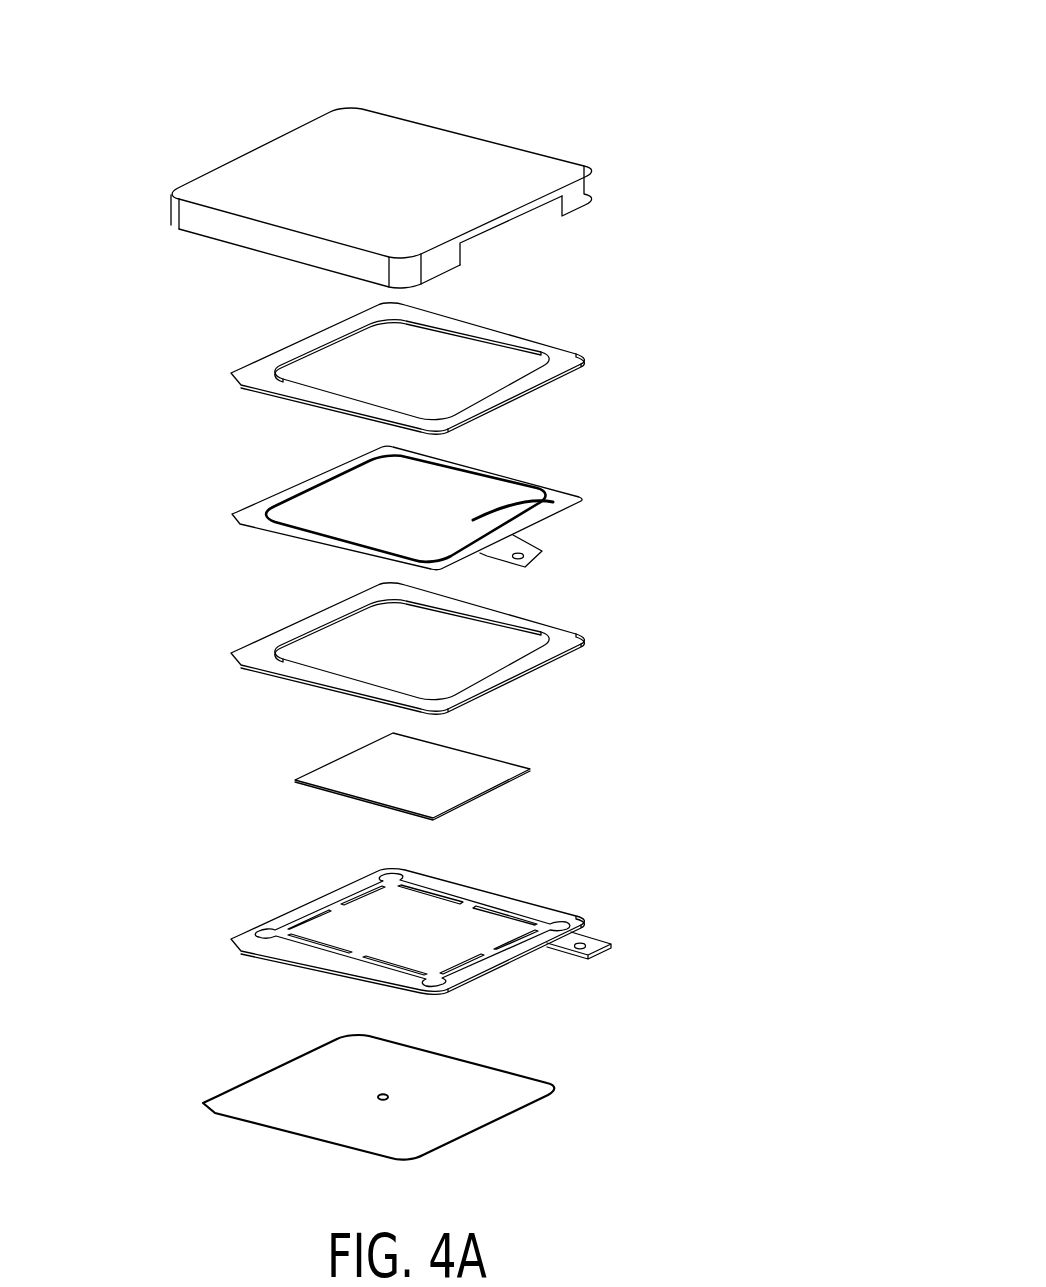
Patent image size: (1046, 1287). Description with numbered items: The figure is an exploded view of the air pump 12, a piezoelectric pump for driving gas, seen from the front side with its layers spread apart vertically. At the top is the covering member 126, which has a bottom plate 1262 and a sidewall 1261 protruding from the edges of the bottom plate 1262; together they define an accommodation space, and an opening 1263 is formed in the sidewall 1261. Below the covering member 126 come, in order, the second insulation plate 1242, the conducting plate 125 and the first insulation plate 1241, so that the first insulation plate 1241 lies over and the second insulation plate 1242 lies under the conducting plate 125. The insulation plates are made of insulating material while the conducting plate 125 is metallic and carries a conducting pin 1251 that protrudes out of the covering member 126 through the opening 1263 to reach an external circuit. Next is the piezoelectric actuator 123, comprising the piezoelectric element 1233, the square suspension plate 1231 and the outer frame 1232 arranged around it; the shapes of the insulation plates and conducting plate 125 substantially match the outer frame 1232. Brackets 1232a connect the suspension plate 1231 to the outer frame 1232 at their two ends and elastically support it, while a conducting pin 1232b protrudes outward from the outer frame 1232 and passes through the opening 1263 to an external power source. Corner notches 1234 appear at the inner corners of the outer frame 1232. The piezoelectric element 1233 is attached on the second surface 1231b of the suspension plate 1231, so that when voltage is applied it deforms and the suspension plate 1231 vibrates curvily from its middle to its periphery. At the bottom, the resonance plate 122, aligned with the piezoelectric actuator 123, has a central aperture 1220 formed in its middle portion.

The air pump 12 is at (789, 25).
The covering member 126 is at (486, 180).
The sidewall 1261 is at (580, 200).
The bottom plate 1262 is at (456, 155).
The opening 1263 is at (528, 235).
The second insulation plate 1242 is at (575, 355).
The conducting plate 125 is at (458, 508).
The conducting pin 1251 is at (537, 553).
The first insulation plate 1241 is at (575, 635).
The piezoelectric actuator 123 is at (504, 872).
The piezoelectric element 1233 is at (455, 768).
The suspension plate 1231 is at (437, 915).
The second surface 1231b is at (352, 922).
The outer frame 1232 is at (463, 921).
The bracket 1232a is at (359, 958).
The conducting pin 1232b is at (629, 937).
The corner notch 1234 is at (545, 903).
The resonance plate 122 is at (396, 1097).
The central aperture 1220 is at (379, 1093).